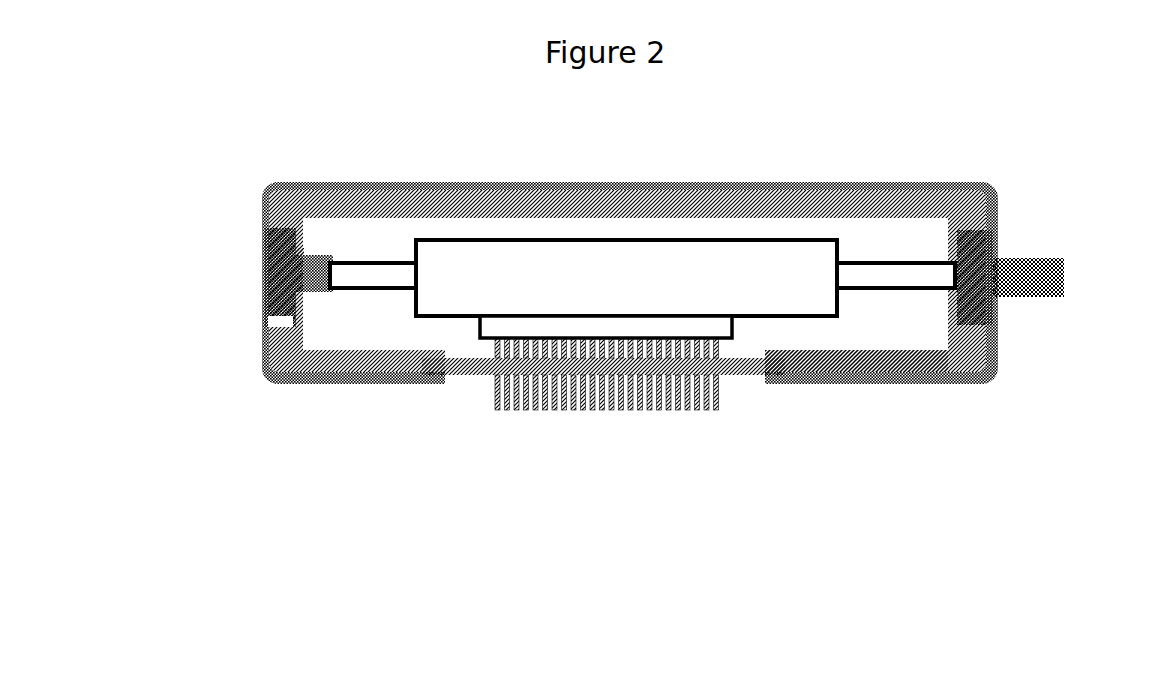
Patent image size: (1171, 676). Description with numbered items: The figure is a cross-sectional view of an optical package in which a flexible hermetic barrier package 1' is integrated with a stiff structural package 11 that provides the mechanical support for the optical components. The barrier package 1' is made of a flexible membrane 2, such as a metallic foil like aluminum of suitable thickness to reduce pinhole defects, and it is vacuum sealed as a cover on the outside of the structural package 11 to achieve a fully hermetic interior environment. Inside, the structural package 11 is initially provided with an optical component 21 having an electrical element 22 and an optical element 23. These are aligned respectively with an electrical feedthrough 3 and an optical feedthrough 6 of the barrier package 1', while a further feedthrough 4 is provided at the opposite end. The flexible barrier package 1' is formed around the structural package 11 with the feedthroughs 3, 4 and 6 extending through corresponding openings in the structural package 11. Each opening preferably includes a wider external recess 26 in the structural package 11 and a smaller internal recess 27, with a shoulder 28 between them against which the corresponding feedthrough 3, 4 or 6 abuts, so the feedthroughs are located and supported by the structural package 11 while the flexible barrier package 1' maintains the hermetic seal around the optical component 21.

The flexible barrier package 1' is at (643, 229).
The flexible membrane 2 is at (738, 182).
The electrical feedthrough 3 is at (737, 378).
The feedthrough 4 is at (265, 272).
The optical feedthrough 6 is at (1058, 255).
The structural package 11 is at (923, 360).
The optical component 21 is at (626, 278).
The electrical element 22 is at (475, 340).
The optical element 23 is at (908, 294).
The external recess 26 is at (283, 316).
The internal recess 27 is at (306, 253).
The shoulder 28 is at (308, 300).